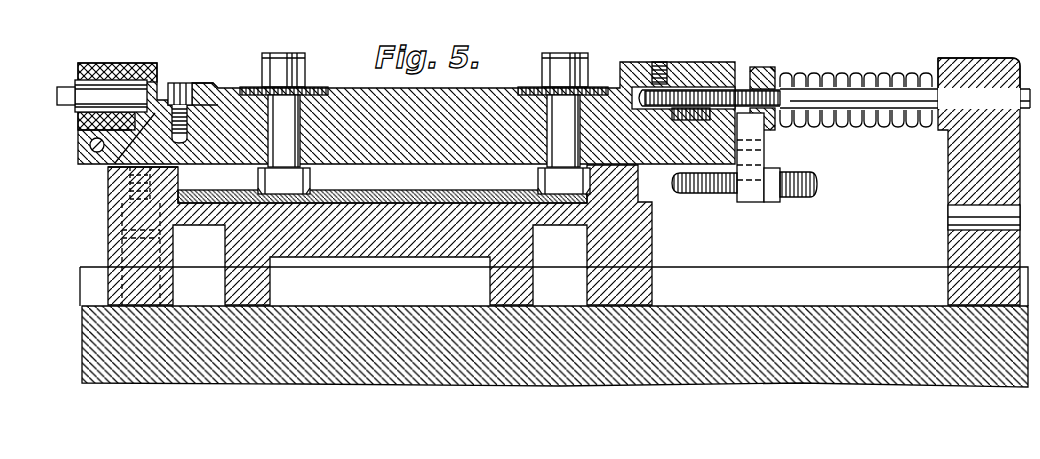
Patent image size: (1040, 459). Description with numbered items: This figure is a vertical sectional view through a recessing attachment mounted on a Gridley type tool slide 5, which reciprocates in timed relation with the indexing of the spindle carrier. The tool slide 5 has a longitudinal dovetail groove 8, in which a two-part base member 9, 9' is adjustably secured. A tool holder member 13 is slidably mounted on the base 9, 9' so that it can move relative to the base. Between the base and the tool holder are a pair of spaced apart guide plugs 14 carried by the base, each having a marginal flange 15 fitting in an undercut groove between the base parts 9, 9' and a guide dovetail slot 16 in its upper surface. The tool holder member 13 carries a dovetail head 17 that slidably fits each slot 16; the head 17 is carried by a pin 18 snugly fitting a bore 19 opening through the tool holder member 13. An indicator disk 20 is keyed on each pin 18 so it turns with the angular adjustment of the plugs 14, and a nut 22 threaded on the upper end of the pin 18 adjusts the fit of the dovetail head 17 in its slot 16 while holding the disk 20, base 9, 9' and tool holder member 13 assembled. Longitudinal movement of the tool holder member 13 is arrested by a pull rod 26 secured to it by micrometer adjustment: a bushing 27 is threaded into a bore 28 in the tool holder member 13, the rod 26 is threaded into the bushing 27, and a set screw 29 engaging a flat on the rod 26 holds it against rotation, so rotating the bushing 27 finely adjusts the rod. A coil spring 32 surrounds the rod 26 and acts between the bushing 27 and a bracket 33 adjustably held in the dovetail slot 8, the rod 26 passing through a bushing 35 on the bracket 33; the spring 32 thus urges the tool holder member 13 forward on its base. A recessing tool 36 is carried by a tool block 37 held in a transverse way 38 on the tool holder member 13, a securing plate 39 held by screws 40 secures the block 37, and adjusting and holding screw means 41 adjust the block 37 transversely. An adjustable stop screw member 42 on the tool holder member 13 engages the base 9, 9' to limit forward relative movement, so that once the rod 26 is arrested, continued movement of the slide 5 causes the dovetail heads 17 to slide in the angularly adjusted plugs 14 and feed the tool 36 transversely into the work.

The tool slide 5 is at (790, 380).
The dovetail groove 8 is at (766, 278).
The base member 9 is at (115, 254).
The base part 9' is at (111, 188).
The tool holder member 13 is at (445, 94).
The guide plug 14 is at (283, 205).
The marginal flange 15 is at (310, 190).
The guide dovetail slot 16 is at (222, 178).
The dovetail head 17 is at (230, 243).
The pin 18 is at (268, 120).
The bore 19 is at (305, 120).
The indicator disk 20 is at (318, 87).
The nut 22 is at (266, 64).
The pull rod 26 is at (862, 124).
The bushing 27 is at (758, 67).
The bore 28 is at (706, 63).
The set screw 29 is at (662, 62).
The coil spring 32 is at (866, 74).
The bracket 33 is at (950, 183).
The bushing 35 is at (938, 66).
The recessing tool 36 is at (58, 90).
The tool block 37 is at (132, 66).
The transverse way 38 is at (108, 167).
The securing plate 39 is at (200, 83).
The screw 40 is at (182, 83).
The adjusting and holding screw means 41 is at (90, 142).
The adjustable stop screw member 42 is at (690, 192).